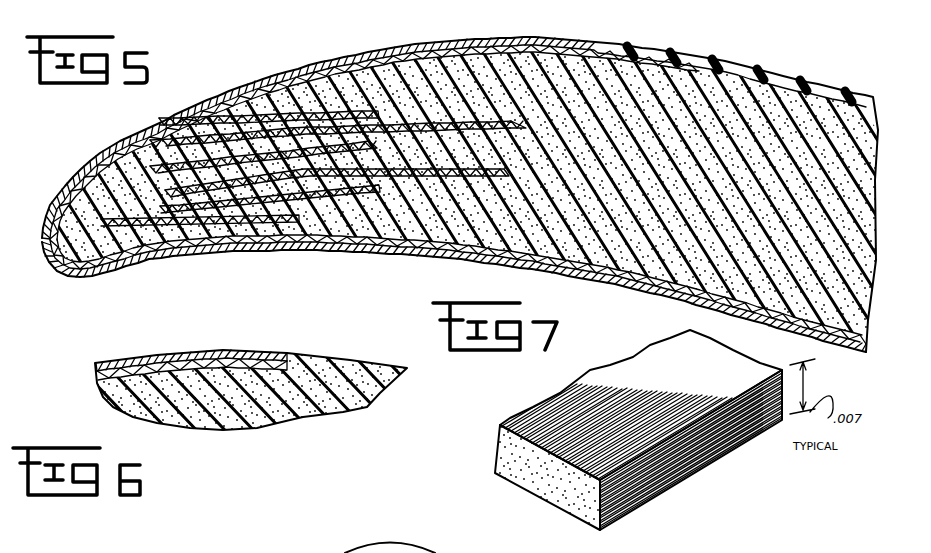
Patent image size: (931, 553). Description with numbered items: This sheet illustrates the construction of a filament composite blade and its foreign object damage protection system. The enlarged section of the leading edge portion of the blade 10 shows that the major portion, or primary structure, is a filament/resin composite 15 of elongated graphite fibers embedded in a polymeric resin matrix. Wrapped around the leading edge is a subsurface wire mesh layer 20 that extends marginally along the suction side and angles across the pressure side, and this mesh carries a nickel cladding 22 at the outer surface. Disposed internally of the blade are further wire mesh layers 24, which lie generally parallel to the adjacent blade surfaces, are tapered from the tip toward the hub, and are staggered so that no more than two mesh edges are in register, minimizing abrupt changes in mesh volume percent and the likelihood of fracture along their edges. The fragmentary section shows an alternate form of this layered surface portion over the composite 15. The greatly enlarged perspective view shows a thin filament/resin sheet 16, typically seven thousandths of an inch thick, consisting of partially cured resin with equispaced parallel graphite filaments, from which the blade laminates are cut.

In FIG. 5, the airfoil blade section 10 is at (585, 35).
In FIG. 5, the filament/resin composite 15 is at (712, 85).
In FIG. 6, the filament/resin composite 15 is at (282, 421).
In FIG. 7, the filament/resin sheet 16 is at (644, 500).
In FIG. 5, the subsurface wire mesh layer 20 is at (368, 38).
In FIG. 6, the subsurface wire mesh layer 20 is at (178, 335).
In FIG. 5, the nickel cladding 22 is at (463, 22).
In FIG. 6, the nickel cladding 22 is at (226, 350).
In FIG. 5, the wire mesh layers 24 is at (398, 168).